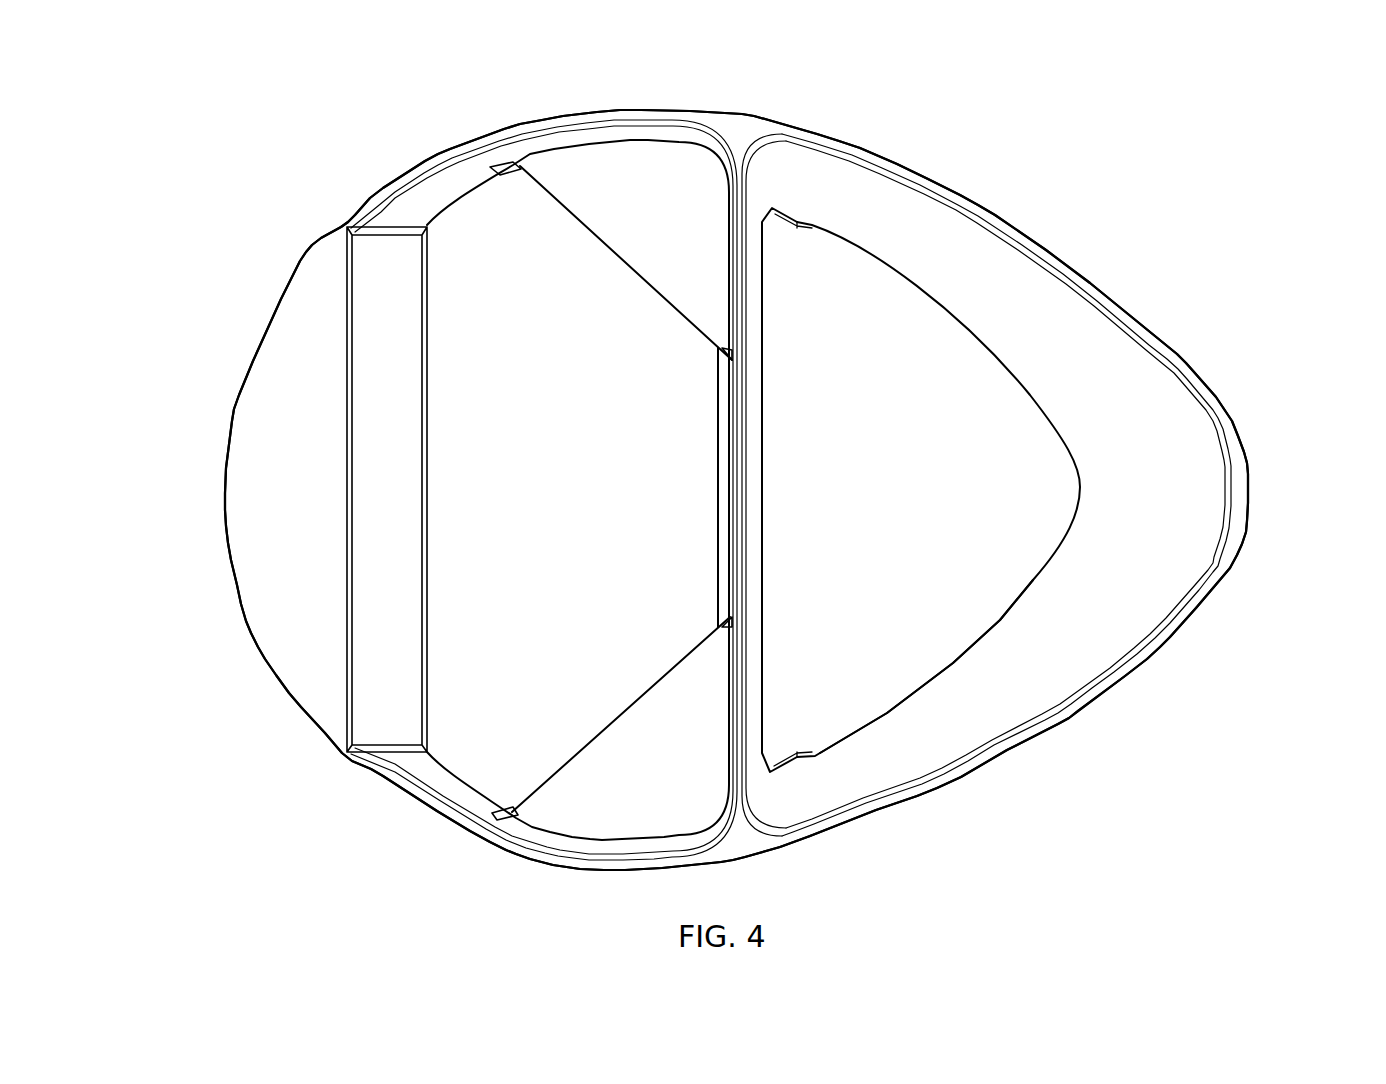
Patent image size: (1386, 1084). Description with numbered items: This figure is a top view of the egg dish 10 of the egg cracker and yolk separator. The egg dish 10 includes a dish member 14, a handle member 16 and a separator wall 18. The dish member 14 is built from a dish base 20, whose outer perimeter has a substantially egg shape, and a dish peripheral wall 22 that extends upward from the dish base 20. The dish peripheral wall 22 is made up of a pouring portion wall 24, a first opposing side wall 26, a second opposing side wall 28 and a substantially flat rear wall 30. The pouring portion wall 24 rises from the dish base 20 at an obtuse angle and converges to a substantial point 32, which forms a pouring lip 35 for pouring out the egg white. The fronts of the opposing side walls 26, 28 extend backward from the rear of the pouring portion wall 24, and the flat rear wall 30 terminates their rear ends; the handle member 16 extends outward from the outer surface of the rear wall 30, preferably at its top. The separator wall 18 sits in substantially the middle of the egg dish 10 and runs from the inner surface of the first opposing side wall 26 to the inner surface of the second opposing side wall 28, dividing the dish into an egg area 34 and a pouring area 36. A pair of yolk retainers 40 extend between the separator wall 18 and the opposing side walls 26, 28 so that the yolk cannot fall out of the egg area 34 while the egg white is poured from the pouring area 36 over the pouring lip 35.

The egg dish 10 is at (1106, 161).
The dish member 14 is at (1115, 277).
The handle member 16 is at (252, 478).
The separator wall 18 is at (755, 673).
The dish base 20 is at (937, 640).
The dish peripheral wall 22 is at (1087, 707).
The pouring portion wall 24 is at (1208, 508).
The first opposing side wall 26 is at (711, 114).
The second opposing side wall 28 is at (613, 862).
The substantially flat rear wall 30 is at (362, 696).
The substantial point 32 is at (1250, 472).
The egg area 34 is at (570, 512).
The pouring lip 35 is at (1158, 497).
The pouring area 36 is at (905, 512).
The yolk retainers 40 is at (568, 180).